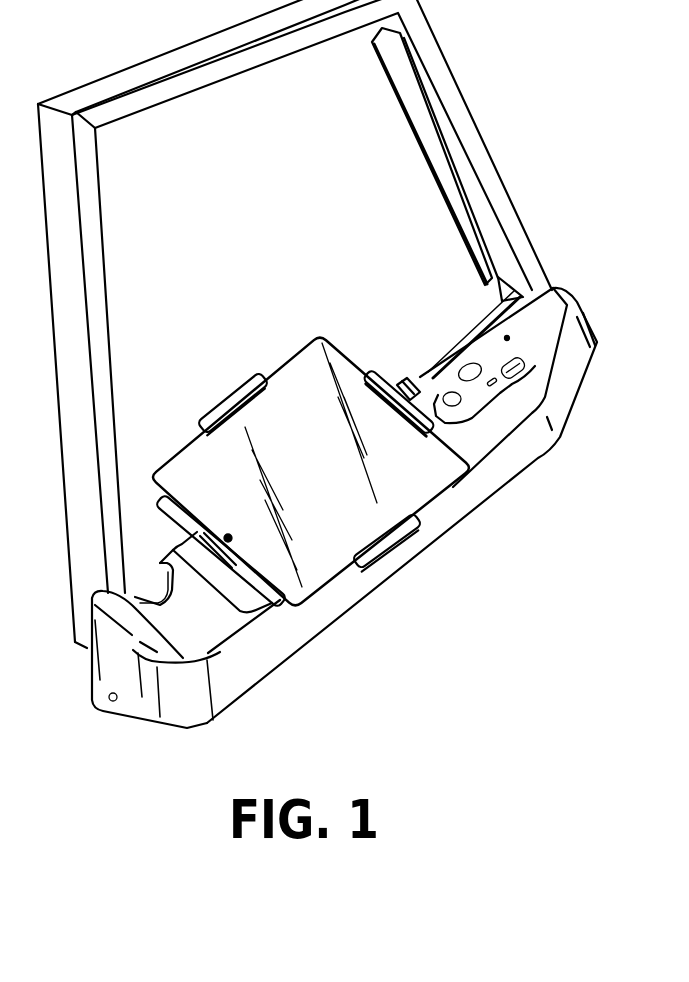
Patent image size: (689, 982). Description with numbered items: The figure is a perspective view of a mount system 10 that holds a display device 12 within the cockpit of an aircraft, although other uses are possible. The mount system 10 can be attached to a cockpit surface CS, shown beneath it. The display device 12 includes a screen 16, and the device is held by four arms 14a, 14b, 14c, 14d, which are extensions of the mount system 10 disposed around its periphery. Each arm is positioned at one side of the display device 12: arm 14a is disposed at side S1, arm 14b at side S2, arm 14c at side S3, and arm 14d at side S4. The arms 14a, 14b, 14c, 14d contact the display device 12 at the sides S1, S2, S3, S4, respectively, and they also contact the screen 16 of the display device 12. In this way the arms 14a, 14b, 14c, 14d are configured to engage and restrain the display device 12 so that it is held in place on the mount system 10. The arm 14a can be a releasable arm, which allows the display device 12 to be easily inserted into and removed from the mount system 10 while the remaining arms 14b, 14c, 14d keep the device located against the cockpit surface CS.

The mount system 10 is at (185, 335).
The display device 12 is at (342, 347).
The arm 14a is at (210, 532).
The arm 14b is at (215, 408).
The arm 14c is at (427, 402).
The arm 14d is at (417, 523).
The screen 16 is at (377, 483).
The side S1 is at (288, 612).
The side S2 is at (182, 442).
The side S3 is at (353, 358).
The side S4 is at (358, 585).
The cockpit surface CS is at (177, 637).